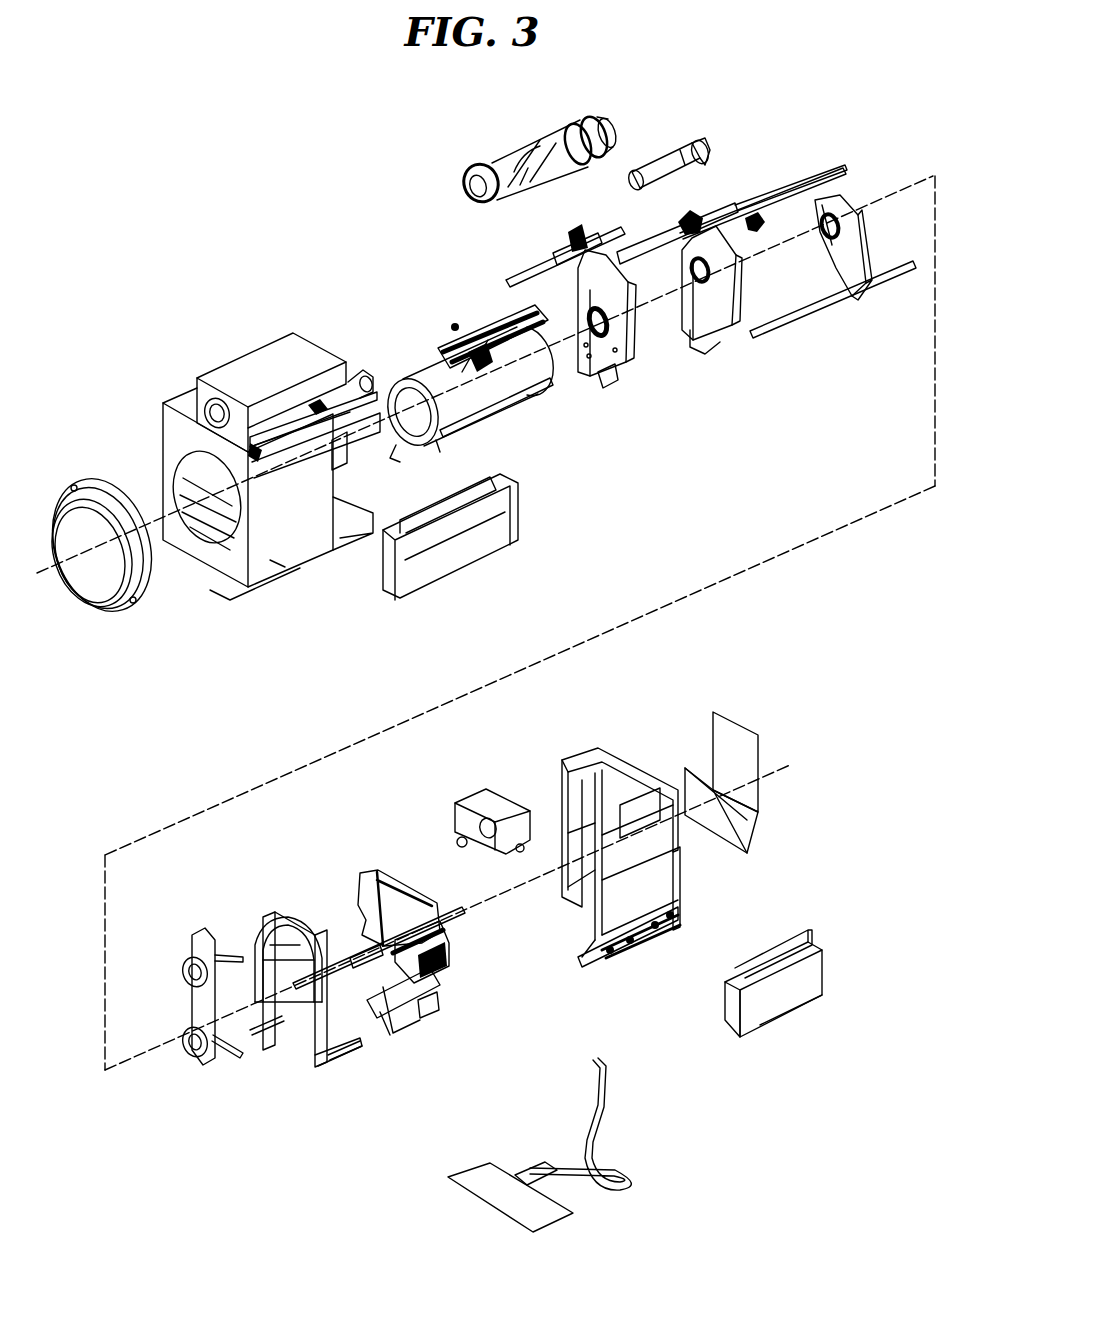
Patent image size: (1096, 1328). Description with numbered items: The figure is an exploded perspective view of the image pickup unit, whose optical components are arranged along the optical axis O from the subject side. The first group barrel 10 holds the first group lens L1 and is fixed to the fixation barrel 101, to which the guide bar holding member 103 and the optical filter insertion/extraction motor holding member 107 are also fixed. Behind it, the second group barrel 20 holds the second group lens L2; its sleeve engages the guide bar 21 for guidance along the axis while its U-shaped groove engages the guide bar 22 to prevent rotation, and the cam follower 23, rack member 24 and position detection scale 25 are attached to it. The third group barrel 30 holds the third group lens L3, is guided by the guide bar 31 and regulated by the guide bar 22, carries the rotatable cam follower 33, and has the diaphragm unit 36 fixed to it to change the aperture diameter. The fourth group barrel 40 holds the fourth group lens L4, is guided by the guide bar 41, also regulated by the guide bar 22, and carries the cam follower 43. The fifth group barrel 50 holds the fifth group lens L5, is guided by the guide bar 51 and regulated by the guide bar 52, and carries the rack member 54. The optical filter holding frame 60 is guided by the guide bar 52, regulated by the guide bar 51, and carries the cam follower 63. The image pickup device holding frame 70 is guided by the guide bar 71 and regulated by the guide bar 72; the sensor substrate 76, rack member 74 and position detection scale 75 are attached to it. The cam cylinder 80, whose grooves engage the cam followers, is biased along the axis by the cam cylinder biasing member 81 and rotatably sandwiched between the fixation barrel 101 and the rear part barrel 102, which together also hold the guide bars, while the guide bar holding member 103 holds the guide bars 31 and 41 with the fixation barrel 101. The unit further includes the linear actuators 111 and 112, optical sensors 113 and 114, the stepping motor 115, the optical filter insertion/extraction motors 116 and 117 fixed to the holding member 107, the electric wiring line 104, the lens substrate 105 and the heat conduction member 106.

The first group barrel 10 is at (101, 562).
The first group lens L1 is at (100, 588).
The optical axis O is at (47, 578).
The fixation barrel 101 is at (230, 585).
The optical sensor 113 is at (322, 403).
The linear actuator 111 is at (482, 550).
The second group barrel 20 is at (465, 373).
The second group lens L2 is at (415, 425).
The guide bar 21 is at (518, 310).
The guide bar 22 is at (533, 393).
The cam follower 23 is at (452, 325).
The rack member 24 is at (488, 395).
The position detection scale 25 is at (480, 327).
The guide bar 31 is at (530, 262).
The cam follower 33 is at (578, 226).
The third group barrel 30 is at (620, 344).
The third group lens L3 is at (590, 367).
The diaphragm unit 36 is at (607, 395).
The guide bar 41 is at (632, 262).
The cam follower 43 is at (702, 215).
The fourth group barrel 40 is at (718, 307).
The fourth group lens L4 is at (700, 318).
The fifth group barrel 50 is at (855, 247).
The fifth group lens L5 is at (820, 243).
The guide bar 51 is at (812, 177).
The guide bar 52 is at (803, 313).
The rack member 54 is at (753, 233).
The cam cylinder 80 is at (527, 145).
The cam cylinder biasing member 81 is at (466, 180).
The stepping motor 115 is at (700, 150).
The rear part barrel 102 is at (637, 834).
The optical sensor 114 is at (663, 887).
The heat conduction member 106 is at (713, 730).
The guide bar holding member 103 is at (455, 810).
The optical filter insertion/extraction motor holding member 107 is at (202, 930).
The optical filter insertion/extraction motor 116 is at (178, 963).
The optical filter insertion/extraction motor 117 is at (207, 1060).
The cam follower 63 is at (287, 928).
The optical filter holding frame 60 is at (330, 1062).
The guide bar 71 is at (338, 960).
The guide bar 72 is at (345, 990).
The sensor substrate 76 is at (407, 883).
The position detection scale 75 is at (447, 952).
The rack member 74 is at (442, 1000).
The image pickup device holding frame 70 is at (422, 1027).
The linear actuator 112 is at (763, 1023).
The electric wiring line 104 is at (632, 1187).
The lens substrate 105 is at (552, 1213).